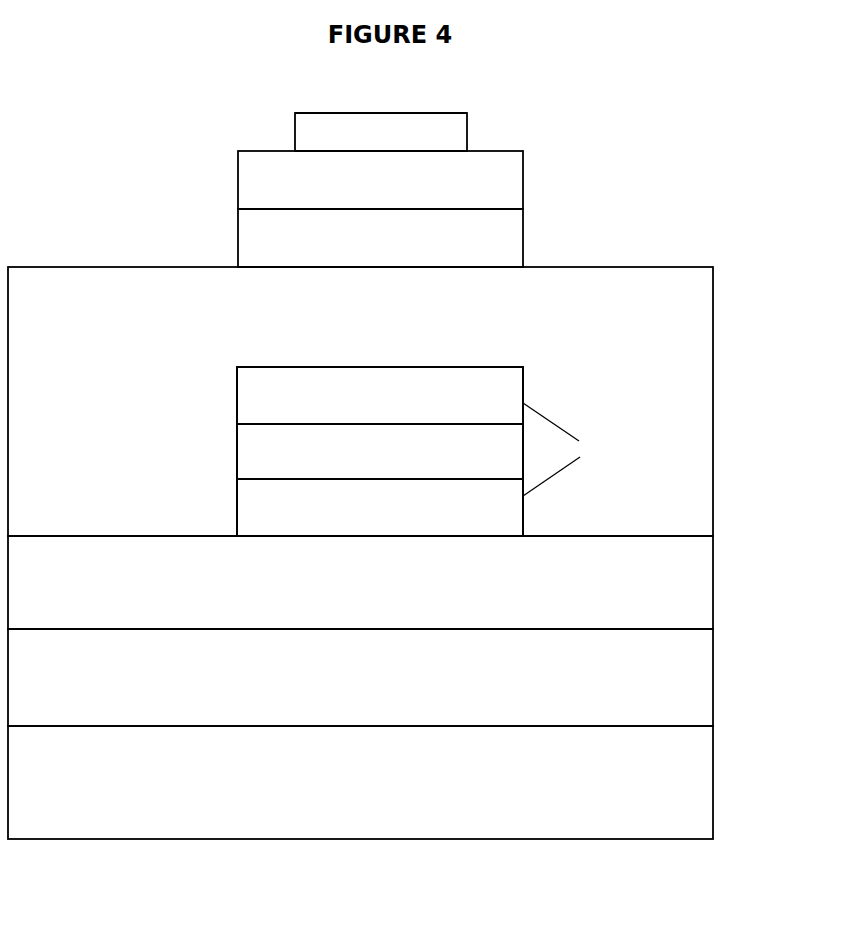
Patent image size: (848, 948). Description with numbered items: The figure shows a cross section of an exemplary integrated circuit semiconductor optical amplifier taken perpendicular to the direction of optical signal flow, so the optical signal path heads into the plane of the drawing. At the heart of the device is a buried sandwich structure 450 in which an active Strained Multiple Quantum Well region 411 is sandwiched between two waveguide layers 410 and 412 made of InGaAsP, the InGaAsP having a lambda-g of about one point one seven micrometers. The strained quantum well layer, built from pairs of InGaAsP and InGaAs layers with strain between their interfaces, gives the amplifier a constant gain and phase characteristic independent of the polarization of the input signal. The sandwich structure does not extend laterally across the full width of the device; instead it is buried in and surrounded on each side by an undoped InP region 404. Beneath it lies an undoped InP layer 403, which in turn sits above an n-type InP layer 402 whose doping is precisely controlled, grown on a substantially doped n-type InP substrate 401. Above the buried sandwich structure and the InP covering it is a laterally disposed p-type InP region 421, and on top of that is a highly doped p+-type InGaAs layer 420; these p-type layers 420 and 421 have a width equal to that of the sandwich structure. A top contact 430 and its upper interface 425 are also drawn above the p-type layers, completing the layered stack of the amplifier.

The n-type InP substrate 401 is at (617, 767).
The n-type InP layer 402 is at (617, 673).
The undoped InP layer 403 is at (617, 577).
The InP region 404 is at (485, 303).
The waveguide layer 410 is at (237, 406).
The active Strained Multiple Quantum Well region 411 is at (237, 463).
The waveguide layer 412 is at (328, 507).
The p+-type InGaAs layer 420 is at (238, 172).
The p-type InP region 421 is at (238, 229).
The top surface / contact interface 425 is at (330, 113).
The metal contact 430 is at (428, 133).
The buried sandwich structure 450 is at (351, 451).